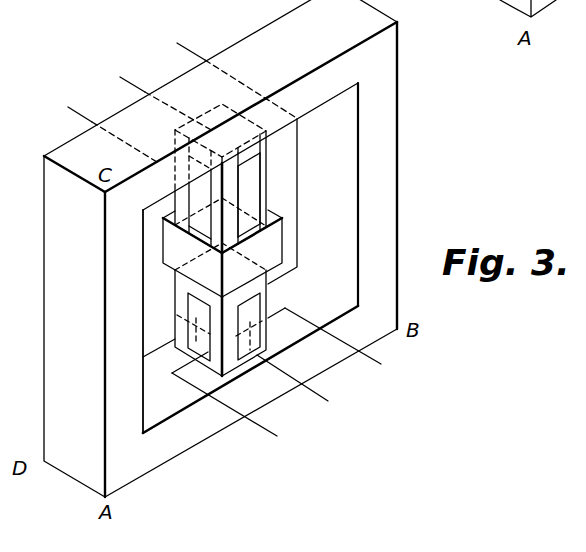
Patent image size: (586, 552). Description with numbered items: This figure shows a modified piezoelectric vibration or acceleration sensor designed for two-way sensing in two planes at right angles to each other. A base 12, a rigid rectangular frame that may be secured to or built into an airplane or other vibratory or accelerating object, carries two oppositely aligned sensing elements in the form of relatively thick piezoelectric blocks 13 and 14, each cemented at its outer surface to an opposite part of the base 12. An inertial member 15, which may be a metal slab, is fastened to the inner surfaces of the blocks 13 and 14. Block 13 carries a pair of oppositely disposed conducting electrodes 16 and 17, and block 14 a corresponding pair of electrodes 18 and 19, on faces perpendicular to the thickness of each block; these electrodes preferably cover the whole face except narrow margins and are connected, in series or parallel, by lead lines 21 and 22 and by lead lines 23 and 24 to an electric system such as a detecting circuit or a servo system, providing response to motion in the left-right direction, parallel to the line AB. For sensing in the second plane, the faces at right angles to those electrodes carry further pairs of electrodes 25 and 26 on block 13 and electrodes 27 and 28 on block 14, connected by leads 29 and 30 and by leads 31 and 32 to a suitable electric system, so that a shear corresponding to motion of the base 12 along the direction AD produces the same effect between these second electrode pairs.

The base 12 is at (383, 215).
The piezoelectric block 13 is at (208, 243).
The piezoelectric block 14 is at (200, 372).
The inertial member 15 is at (290, 251).
The conducting electrode 16 is at (180, 207).
The conducting electrode 17 is at (295, 121).
The conducting electrode 18 is at (177, 318).
The conducting electrode 19 is at (284, 266).
The lead line 21 is at (82, 116).
The lead line 22 is at (197, 54).
The lead line 23 is at (277, 436).
The lead line 24 is at (381, 364).
The electrode 25 is at (250, 183).
The electrode 26 is at (220, 98).
The electrode 27 is at (260, 322).
The electrode 28 is at (179, 316).
The lead 29 is at (262, 160).
The lead 30 is at (159, 70).
The lead 31 is at (326, 400).
The lead 32 is at (188, 334).